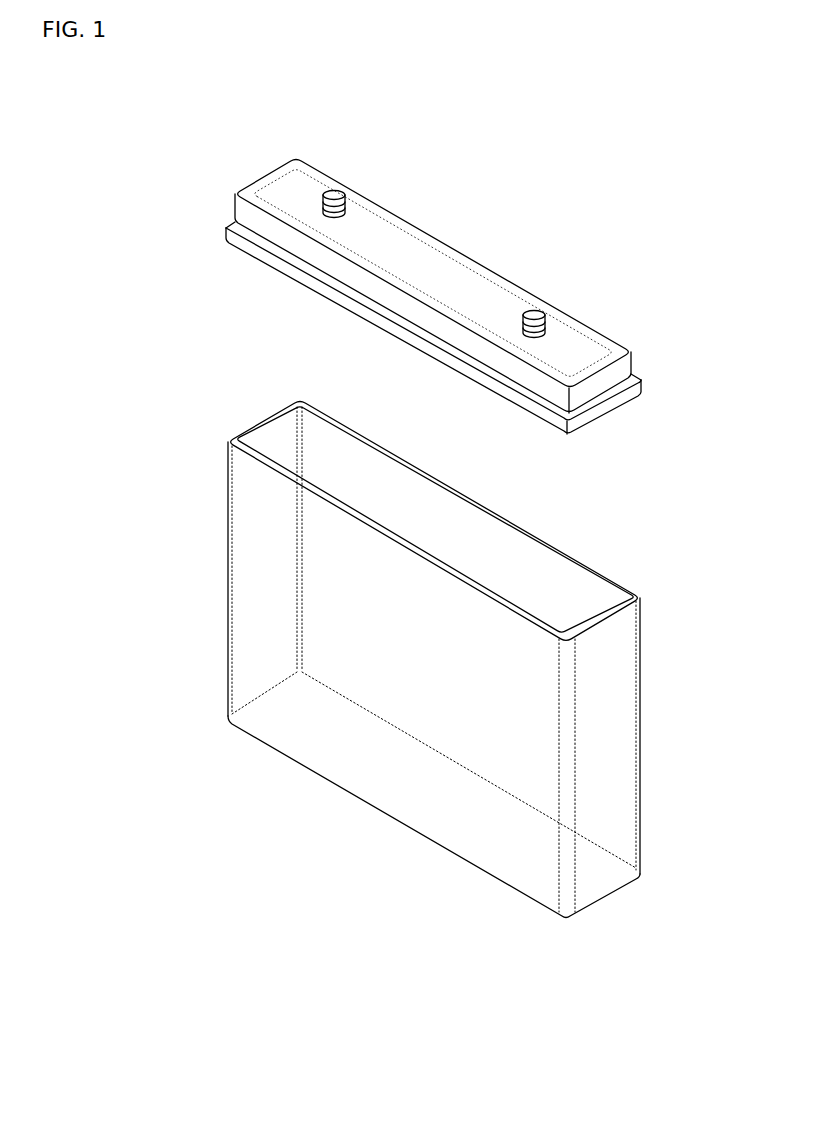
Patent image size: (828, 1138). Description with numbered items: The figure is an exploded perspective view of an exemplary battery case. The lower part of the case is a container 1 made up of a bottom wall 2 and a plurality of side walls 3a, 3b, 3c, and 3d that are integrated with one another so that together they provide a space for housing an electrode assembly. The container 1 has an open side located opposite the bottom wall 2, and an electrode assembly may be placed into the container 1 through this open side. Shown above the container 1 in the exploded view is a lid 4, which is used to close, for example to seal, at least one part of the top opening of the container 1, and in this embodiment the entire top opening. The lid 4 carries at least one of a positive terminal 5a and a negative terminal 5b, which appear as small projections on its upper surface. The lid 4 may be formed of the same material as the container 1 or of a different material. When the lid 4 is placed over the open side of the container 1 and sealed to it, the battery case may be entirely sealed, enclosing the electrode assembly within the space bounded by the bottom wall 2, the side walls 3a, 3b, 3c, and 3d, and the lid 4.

The container 1 is at (458, 645).
The bottom wall 2 is at (363, 803).
The side wall 3a is at (628, 701).
The side wall 3b is at (357, 512).
The side wall 3c is at (258, 424).
The side wall 3d is at (490, 503).
The lid 4 is at (437, 252).
The positive terminal 5a is at (338, 191).
The negative terminal 5b is at (538, 310).